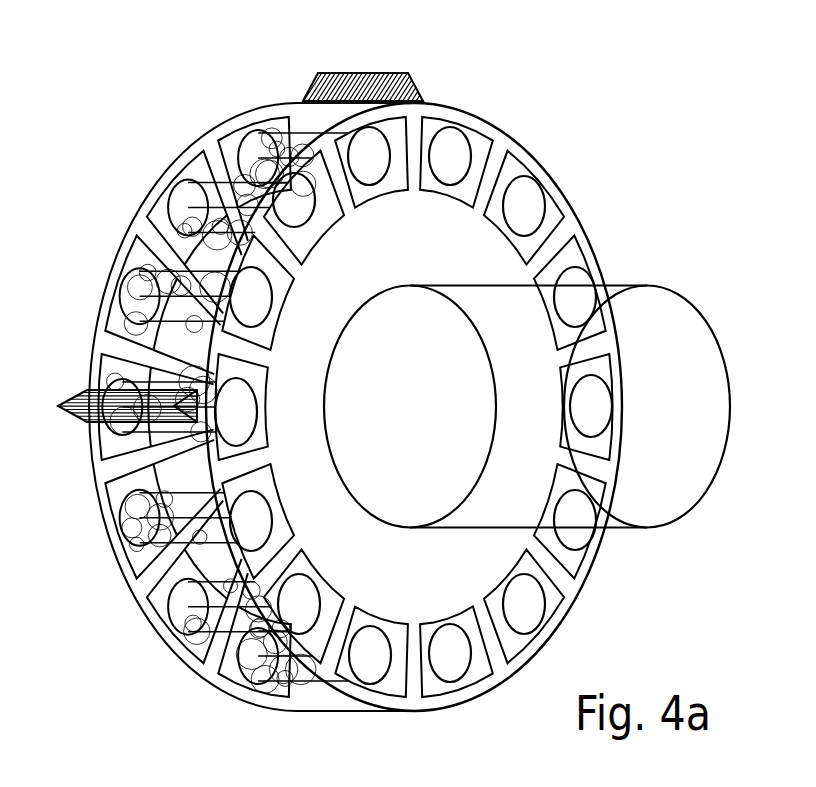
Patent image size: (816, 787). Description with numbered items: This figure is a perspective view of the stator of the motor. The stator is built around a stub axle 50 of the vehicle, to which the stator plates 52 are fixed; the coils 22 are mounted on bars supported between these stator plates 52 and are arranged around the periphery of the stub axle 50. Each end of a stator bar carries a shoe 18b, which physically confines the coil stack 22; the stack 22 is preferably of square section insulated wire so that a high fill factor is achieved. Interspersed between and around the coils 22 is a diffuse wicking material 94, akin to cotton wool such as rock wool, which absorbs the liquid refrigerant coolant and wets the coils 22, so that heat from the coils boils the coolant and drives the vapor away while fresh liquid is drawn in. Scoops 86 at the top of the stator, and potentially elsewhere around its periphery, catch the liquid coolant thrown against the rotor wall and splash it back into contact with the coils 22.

The coil stack 22 is at (258, 132).
The diffuse material 94 is at (158, 248).
The stator plate 52 is at (498, 137).
The shoe 18b is at (300, 212).
The stub axle 50 is at (627, 413).
The scoop 86 is at (393, 73).